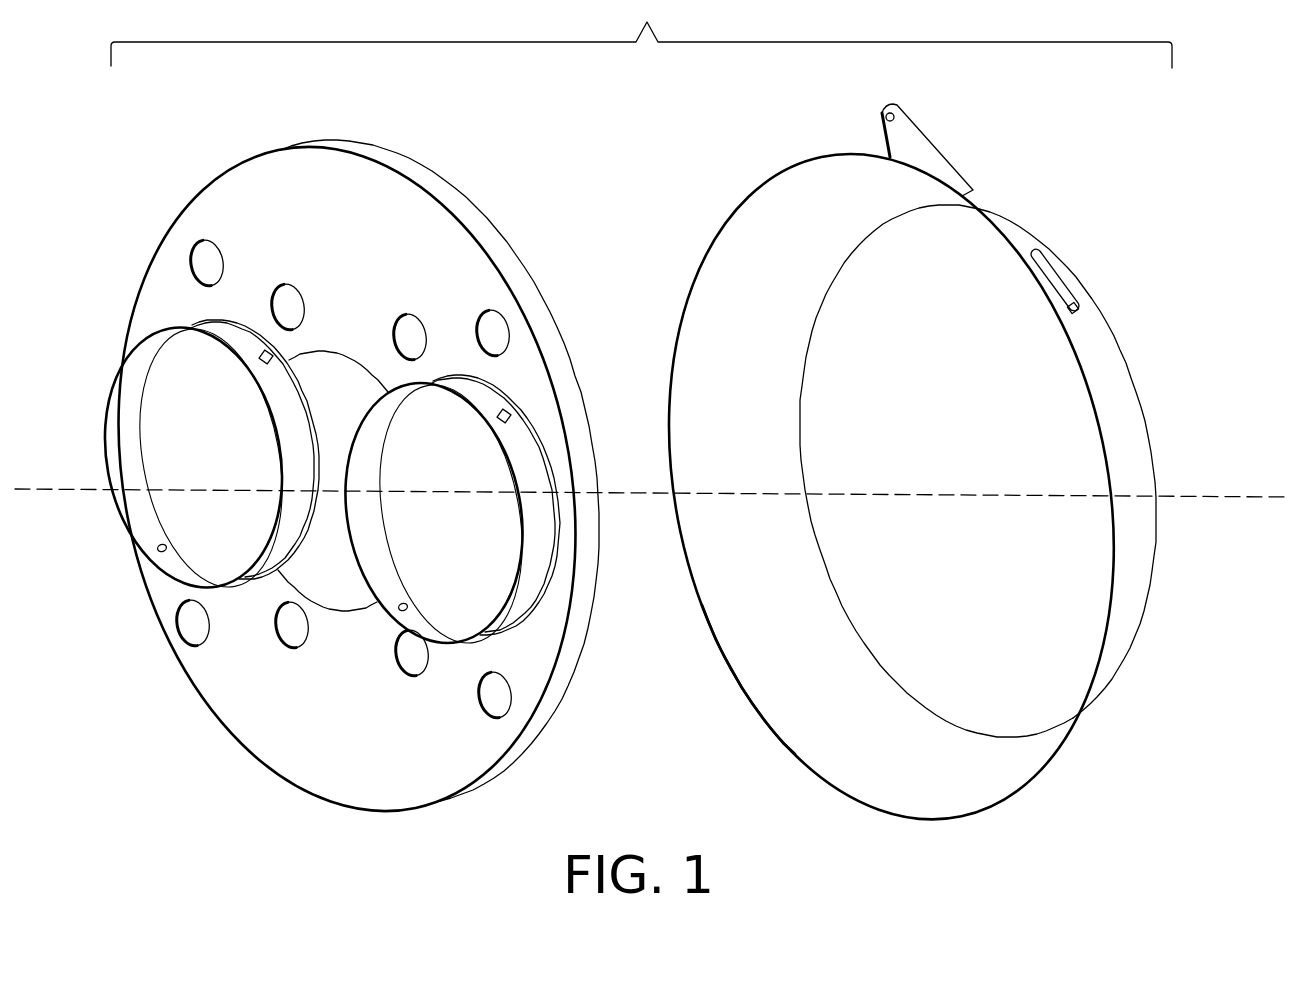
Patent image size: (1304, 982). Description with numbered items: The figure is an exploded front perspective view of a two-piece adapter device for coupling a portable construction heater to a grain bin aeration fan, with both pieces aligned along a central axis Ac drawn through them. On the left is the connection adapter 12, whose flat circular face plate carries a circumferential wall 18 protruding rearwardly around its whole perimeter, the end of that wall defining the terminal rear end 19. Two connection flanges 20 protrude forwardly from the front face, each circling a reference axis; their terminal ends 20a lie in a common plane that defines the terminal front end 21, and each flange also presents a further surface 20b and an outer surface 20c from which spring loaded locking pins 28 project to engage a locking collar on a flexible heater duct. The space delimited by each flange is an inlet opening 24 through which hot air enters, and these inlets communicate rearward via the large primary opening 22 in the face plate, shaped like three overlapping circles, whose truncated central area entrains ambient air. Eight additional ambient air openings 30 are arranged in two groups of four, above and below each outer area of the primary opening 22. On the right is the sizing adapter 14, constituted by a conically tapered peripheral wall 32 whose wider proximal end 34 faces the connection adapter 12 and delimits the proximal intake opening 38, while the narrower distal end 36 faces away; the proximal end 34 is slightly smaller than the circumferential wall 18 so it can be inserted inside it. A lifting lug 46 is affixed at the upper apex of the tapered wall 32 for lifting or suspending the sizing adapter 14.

The connection adapter 12 is at (355, 479).
The sizing adapter 14 is at (917, 482).
The circumferential wall 18 is at (507, 253).
The terminal rear end 19 is at (572, 303).
The connection flange 20 is at (343, 481).
The terminal end of connection flange 20a is at (107, 420).
The bore of port 20b is at (125, 475).
The outer surface of connection flange 20c is at (530, 593).
The terminal front end 21 is at (107, 454).
The primary opening 22 is at (320, 578).
The inlet opening 24 is at (147, 527).
The spring loaded locking pins 28 is at (262, 357).
The ambient air openings 30 is at (210, 273).
The conically tapered peripheral wall 32 is at (788, 571).
The proximal end 34 is at (714, 226).
The distal end 36 is at (1130, 353).
The proximal intake opening 38 is at (802, 705).
The lifting lug 46 is at (918, 157).
The central axis Ac is at (1188, 495).